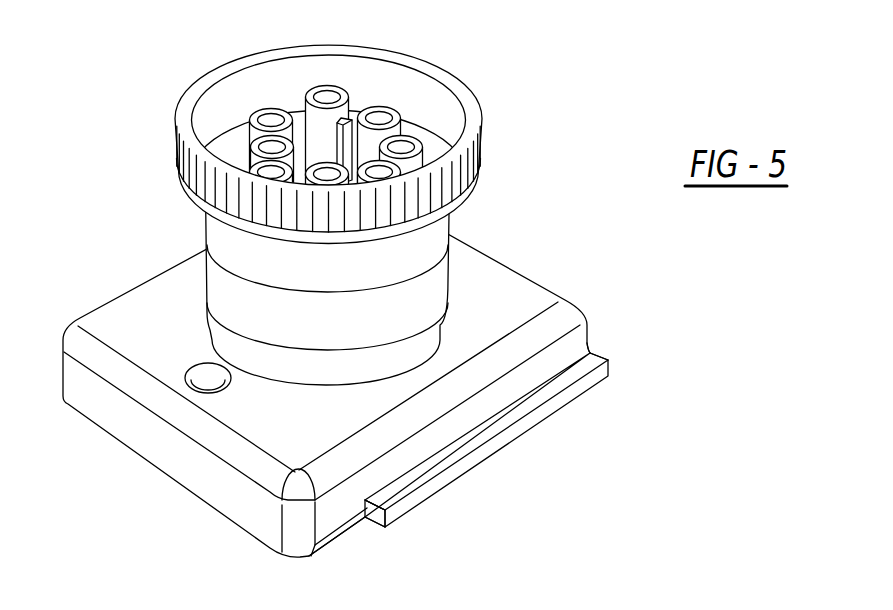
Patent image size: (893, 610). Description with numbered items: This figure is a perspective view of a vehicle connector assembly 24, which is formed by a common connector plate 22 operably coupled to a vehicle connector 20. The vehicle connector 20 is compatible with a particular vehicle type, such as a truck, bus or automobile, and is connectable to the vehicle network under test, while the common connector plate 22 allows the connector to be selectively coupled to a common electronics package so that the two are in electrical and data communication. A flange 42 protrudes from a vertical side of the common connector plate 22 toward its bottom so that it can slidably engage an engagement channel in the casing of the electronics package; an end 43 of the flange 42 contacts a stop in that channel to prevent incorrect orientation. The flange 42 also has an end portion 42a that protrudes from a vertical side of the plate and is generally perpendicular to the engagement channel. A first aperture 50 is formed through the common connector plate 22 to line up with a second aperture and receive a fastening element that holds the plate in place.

The vehicle connector 20 is at (208, 227).
The common connector plate 22 is at (317, 366).
The vehicle connector assembly 24 is at (381, 298).
The flange 42 is at (513, 449).
The end portion 42a is at (592, 352).
The end 43 is at (377, 514).
The first aperture 50 is at (186, 378).